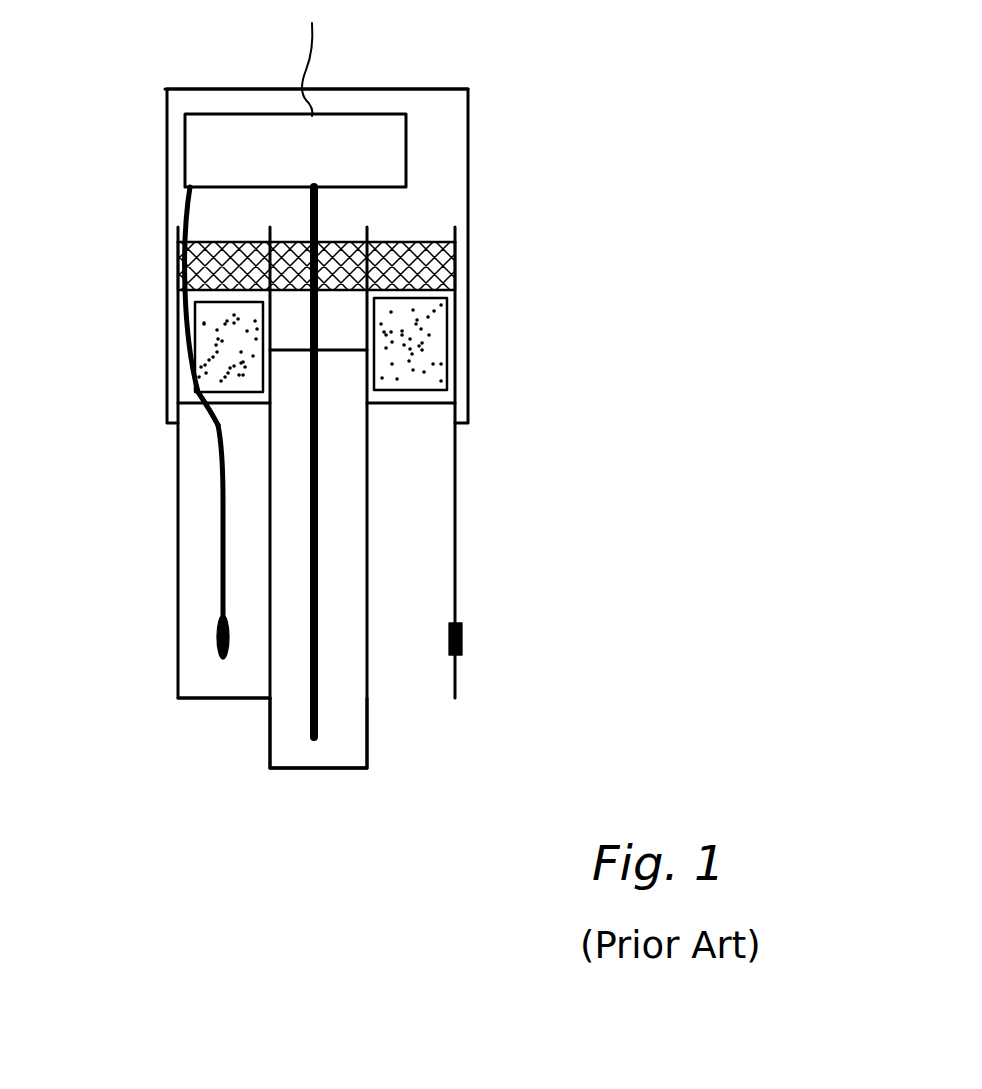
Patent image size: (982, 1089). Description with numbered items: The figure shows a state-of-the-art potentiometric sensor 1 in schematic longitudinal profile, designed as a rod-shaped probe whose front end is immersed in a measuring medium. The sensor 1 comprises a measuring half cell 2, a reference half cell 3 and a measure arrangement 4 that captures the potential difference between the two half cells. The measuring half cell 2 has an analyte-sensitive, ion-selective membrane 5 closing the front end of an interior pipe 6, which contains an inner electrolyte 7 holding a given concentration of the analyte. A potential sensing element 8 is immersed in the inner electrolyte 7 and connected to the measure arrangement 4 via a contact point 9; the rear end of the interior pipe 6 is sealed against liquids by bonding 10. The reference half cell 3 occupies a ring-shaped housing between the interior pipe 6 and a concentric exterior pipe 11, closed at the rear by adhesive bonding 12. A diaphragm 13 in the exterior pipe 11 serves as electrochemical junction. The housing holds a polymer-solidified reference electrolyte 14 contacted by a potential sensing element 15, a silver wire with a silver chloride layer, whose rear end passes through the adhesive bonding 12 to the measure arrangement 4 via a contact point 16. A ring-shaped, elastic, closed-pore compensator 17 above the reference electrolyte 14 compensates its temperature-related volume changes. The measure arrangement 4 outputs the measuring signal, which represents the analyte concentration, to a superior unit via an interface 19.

The potentiometric sensor 1 is at (598, 364).
The measuring half cell 2 is at (383, 740).
The reference half cell 3 is at (476, 560).
The measure arrangement 4 is at (295, 150).
The analyte-sensitive membrane 5 is at (343, 768).
The interior pipe 6 is at (368, 537).
The inner electrolyte 7 is at (344, 640).
The potential sensing element 8 is at (320, 467).
The contact point 9 is at (318, 192).
The bonding 10 is at (368, 240).
The exterior pipe 11 is at (178, 555).
The adhesive bonding 12 is at (458, 255).
The diaphragm 13 is at (462, 633).
The reference electrolyte 14 is at (190, 645).
The potential sensing element 15 is at (218, 487).
The contact point 16 is at (190, 190).
The compensator 17 is at (433, 343).
The interface 19 is at (320, 52).